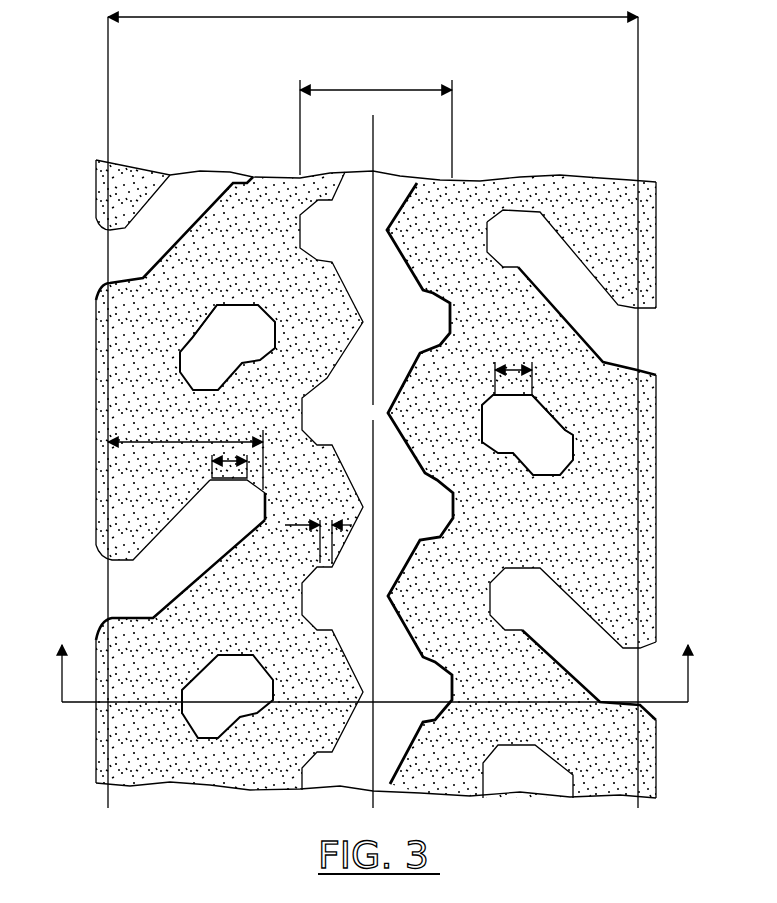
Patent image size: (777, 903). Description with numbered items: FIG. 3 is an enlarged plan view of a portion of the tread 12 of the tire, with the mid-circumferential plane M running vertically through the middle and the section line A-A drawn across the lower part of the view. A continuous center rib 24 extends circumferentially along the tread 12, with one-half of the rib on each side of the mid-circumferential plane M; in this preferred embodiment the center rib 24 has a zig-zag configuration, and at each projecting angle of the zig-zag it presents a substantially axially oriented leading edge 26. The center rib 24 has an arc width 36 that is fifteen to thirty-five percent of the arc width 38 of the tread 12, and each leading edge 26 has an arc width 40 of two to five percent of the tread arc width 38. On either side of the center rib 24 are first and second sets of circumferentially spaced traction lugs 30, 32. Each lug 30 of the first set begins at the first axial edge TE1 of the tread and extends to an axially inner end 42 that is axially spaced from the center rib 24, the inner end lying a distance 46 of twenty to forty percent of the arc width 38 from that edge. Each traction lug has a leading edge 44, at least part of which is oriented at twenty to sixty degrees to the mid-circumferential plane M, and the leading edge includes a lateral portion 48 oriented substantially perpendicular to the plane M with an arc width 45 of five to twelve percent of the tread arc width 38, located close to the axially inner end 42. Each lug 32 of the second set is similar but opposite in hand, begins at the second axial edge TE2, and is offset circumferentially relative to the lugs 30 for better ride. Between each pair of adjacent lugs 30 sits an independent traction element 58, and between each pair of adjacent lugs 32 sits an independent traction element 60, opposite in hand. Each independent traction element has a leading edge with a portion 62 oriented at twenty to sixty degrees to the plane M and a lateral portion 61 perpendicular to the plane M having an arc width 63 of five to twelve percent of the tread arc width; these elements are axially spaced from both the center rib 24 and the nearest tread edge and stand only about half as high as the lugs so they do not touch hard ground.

The tread 12 is at (133, 367).
The center rib 24 is at (393, 192).
The leading edges 26 is at (318, 390).
The traction lug 30 is at (122, 584).
The traction lug 32 is at (628, 342).
The arc width 36 is at (366, 90).
The arc width 38 is at (488, 20).
The arc width 40 is at (294, 527).
The axially inner end 42 is at (270, 496).
The leading edge 44 is at (168, 530).
The arc width 45 is at (245, 455).
The distance 46 is at (183, 442).
The lateral portion 48 is at (222, 483).
The independent traction element 58 is at (208, 345).
The independent traction element 60 is at (560, 446).
The lateral portion 61 is at (510, 396).
The portion of leading edge 62 is at (205, 318).
The arc width 63 is at (510, 362).
The first axial edge TE1 is at (108, 85).
The second axial edge TE2 is at (640, 115).
The mid-circumferential plane M is at (388, 461).
The section line A- A is at (374, 660).